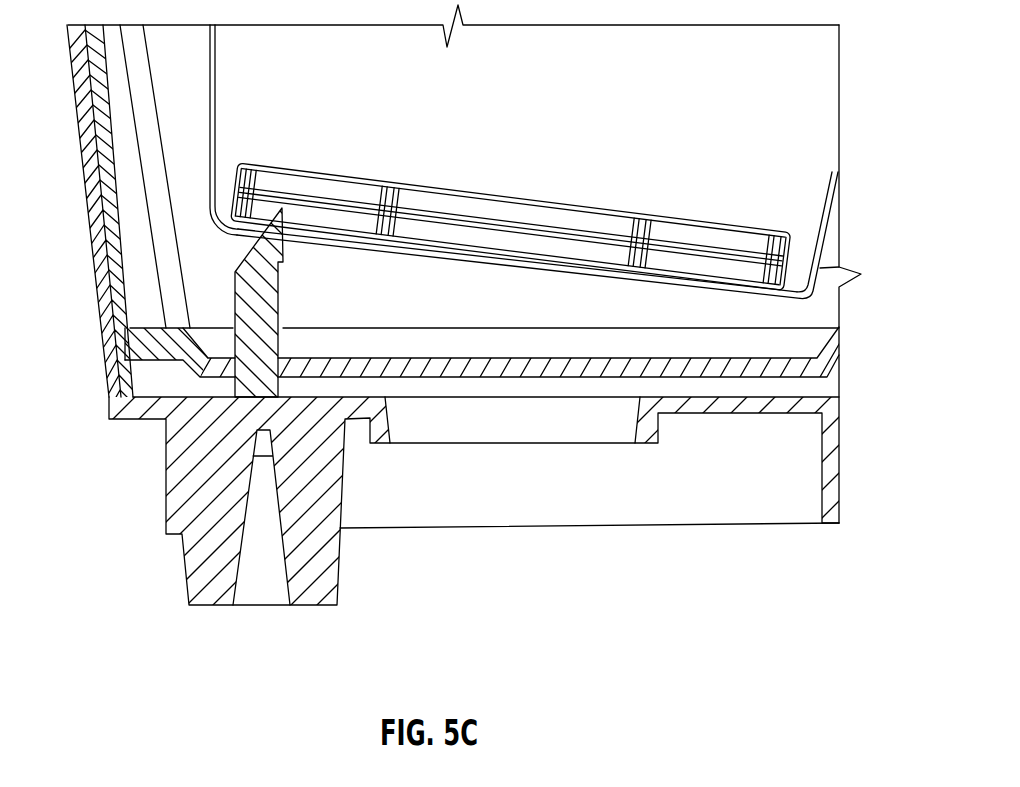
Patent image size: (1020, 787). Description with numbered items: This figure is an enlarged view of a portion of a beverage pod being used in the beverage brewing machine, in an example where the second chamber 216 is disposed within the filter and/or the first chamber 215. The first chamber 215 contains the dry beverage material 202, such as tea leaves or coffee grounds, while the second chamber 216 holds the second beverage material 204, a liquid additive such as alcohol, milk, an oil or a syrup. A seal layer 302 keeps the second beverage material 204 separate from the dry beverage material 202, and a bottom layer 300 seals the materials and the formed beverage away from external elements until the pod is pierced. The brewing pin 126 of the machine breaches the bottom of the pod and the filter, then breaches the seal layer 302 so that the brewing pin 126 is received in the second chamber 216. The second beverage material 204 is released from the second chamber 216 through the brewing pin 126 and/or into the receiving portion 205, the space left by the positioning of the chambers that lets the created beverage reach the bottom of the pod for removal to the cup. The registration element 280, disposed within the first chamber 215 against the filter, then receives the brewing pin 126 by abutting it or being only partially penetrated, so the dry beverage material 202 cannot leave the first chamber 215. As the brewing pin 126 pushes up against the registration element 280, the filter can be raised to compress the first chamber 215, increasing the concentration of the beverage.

The dry beverage material 202 is at (792, 84).
The first chamber 215 is at (545, 118).
The registration element 280 is at (315, 187).
The seal layer 302 is at (322, 240).
The second chamber 216 is at (338, 227).
The second beverage material 204 is at (400, 238).
The bottom layer 300 is at (437, 362).
The receiving portion 205 is at (515, 340).
The brewing pin 126 is at (250, 270).